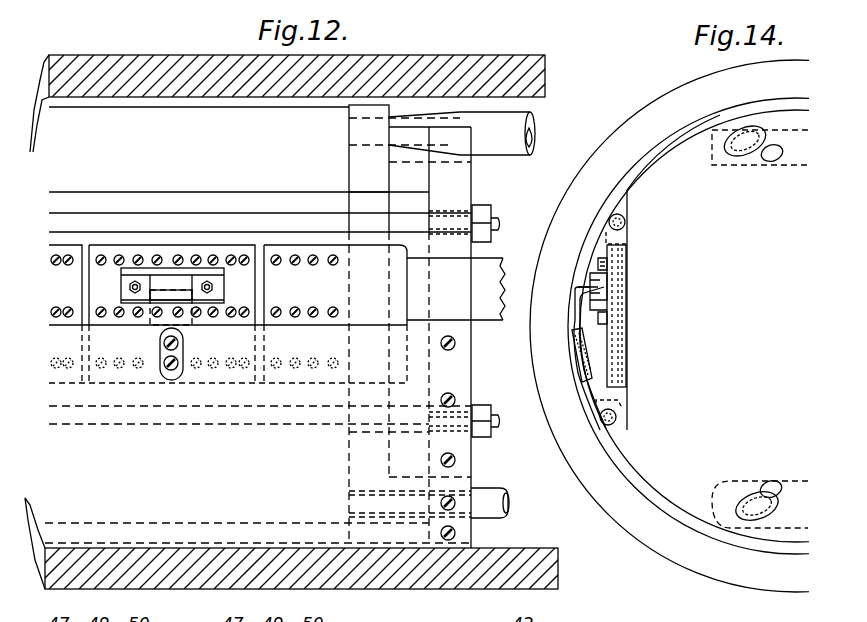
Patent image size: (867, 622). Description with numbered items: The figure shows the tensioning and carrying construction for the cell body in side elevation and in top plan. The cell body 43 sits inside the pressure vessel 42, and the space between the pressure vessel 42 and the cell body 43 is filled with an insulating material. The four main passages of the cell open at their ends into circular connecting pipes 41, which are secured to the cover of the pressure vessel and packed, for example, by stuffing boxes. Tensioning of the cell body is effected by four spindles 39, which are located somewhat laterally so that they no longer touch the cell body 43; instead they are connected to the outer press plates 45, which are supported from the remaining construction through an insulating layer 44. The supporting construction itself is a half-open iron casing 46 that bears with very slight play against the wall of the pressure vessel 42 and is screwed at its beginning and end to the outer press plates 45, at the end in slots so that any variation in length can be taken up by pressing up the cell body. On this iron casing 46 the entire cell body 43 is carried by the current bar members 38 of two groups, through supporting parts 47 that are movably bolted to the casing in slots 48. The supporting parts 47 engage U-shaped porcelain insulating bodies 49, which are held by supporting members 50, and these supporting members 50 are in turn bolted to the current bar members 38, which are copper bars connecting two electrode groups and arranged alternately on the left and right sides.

In FIG. 12, the current conducting band 38 is at (237, 255).
In FIG. 14, the current conducting band 38 is at (608, 352).
In FIG. 12, the spindle 39 is at (500, 216).
In FIG. 14, the spindle 39 is at (626, 224).
In FIG. 12, the circular connecting pipe 41 is at (508, 143).
In FIG. 14, the circular connecting pipe 41 is at (750, 155).
In FIG. 12, the pressure vessel 42 is at (488, 85).
In FIG. 14, the pressure vessel 42 is at (636, 136).
In FIG. 12, the cell body 43 is at (258, 367).
In FIG. 14, the cell body 43 is at (693, 272).
In FIG. 12, the insulating layer 44 is at (418, 380).
In FIG. 12, the outer press plate 45 is at (458, 358).
In FIG. 12, the iron casing 46 is at (405, 546).
In FIG. 14, the iron casing 46 is at (683, 520).
In FIG. 12, the supporting part 47 is at (171, 287).
In FIG. 14, the supporting part 47 is at (580, 318).
In FIG. 12, the slot 48 is at (176, 336).
In FIG. 14, the slot 48 is at (580, 376).
In FIG. 12, the insulating body of porcelain 49 is at (185, 278).
In FIG. 14, the insulating body of porcelain 49 is at (590, 281).
In FIG. 12, the supporting member 50 is at (198, 280).
In FIG. 14, the supporting member 50 is at (596, 272).